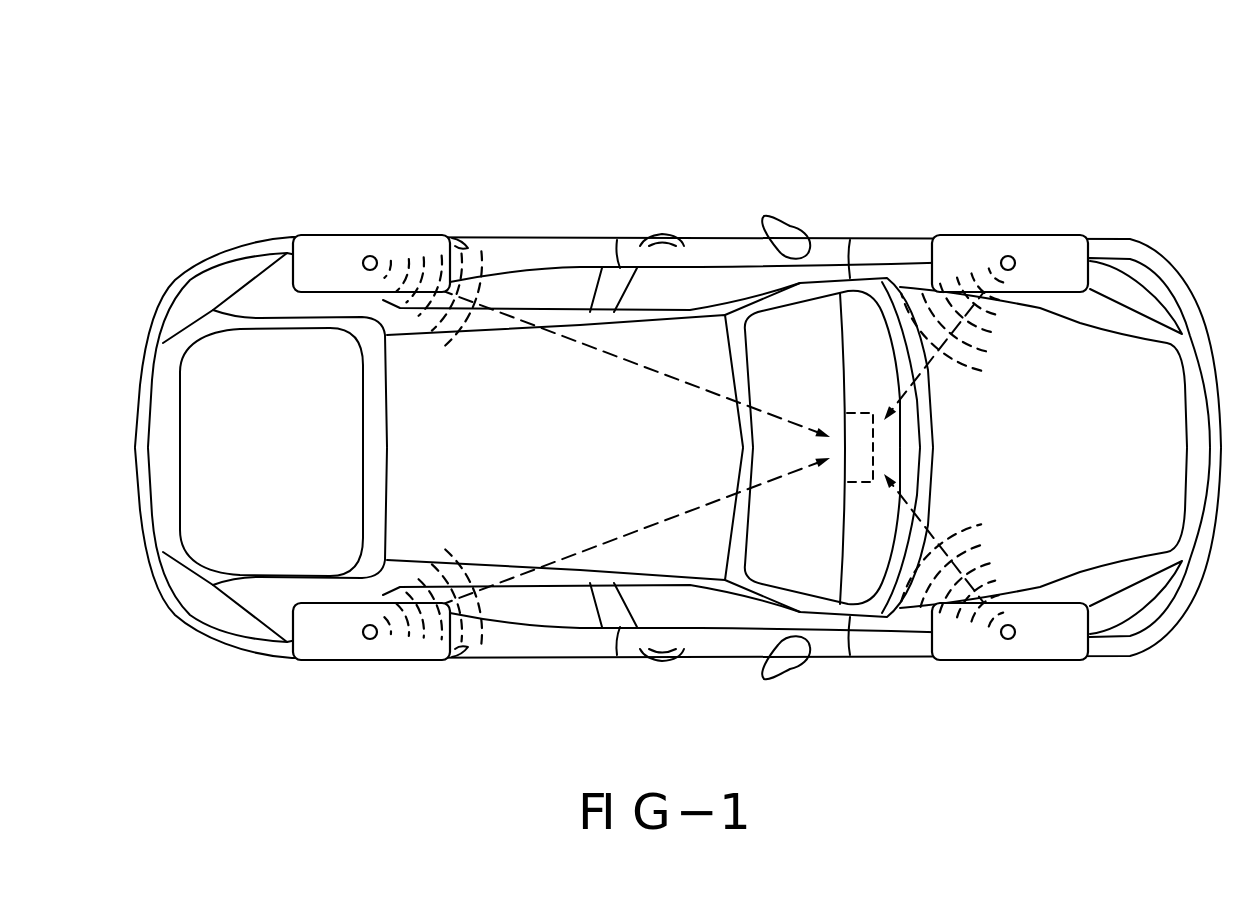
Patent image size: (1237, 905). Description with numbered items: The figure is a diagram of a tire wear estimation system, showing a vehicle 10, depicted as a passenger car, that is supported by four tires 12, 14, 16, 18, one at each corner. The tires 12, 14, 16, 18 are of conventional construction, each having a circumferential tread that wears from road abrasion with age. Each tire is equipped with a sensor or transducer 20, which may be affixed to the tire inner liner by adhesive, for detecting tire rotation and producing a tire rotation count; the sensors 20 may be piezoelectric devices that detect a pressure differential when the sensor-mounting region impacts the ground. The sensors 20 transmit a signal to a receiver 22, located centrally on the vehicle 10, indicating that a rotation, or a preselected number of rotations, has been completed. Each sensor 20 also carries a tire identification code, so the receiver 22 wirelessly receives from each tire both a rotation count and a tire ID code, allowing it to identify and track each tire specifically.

The vehicle 10 is at (601, 128).
The tire 12 is at (988, 236).
The tire 14 is at (988, 660).
The tire 16 is at (390, 660).
The tire 18 is at (390, 236).
The sensor 20 is at (366, 257).
The receiver 22 is at (882, 450).